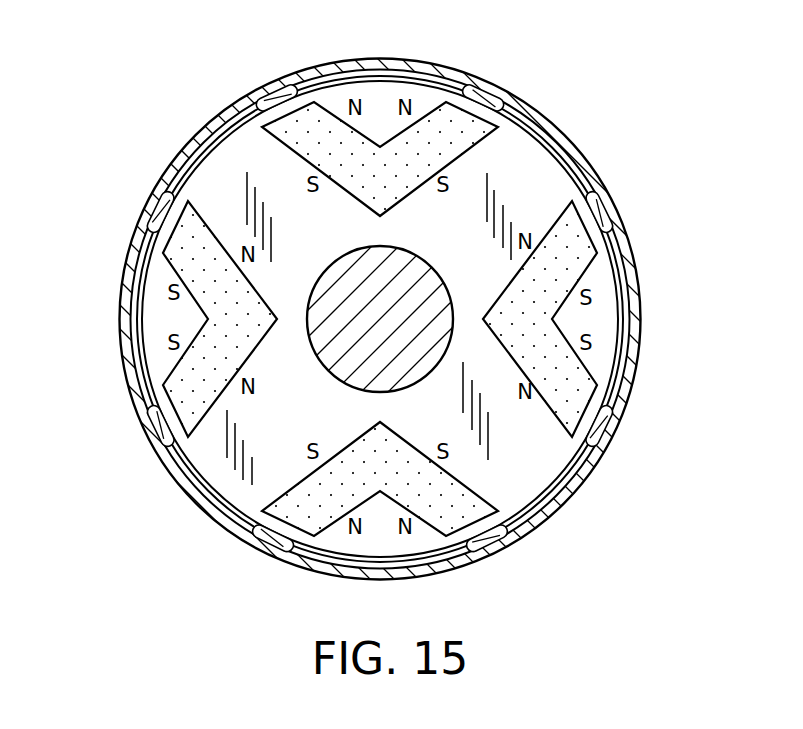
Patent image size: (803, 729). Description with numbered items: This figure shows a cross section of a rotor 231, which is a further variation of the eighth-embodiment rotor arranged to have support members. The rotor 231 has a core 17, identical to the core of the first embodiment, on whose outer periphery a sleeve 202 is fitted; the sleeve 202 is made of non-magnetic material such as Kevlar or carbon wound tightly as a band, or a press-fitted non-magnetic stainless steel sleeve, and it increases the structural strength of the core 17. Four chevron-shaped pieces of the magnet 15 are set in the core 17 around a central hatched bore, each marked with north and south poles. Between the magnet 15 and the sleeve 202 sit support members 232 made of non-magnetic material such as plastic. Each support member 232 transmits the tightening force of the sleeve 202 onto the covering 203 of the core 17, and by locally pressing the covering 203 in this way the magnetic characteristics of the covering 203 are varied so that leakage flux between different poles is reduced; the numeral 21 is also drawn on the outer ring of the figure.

The rotor 231 is at (646, 268).
The stator core 21 is at (572, 158).
The core 17 is at (220, 172).
The sleeve 202 is at (147, 228).
The covering 203 is at (318, 108).
The support member 232 is at (470, 92).
The magnet 15 is at (440, 128).